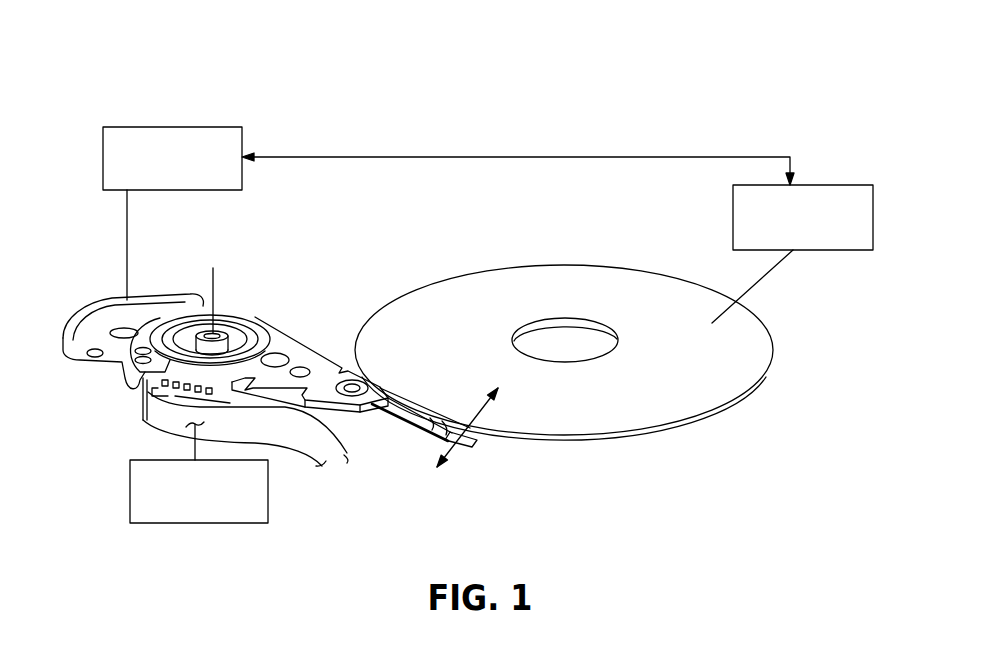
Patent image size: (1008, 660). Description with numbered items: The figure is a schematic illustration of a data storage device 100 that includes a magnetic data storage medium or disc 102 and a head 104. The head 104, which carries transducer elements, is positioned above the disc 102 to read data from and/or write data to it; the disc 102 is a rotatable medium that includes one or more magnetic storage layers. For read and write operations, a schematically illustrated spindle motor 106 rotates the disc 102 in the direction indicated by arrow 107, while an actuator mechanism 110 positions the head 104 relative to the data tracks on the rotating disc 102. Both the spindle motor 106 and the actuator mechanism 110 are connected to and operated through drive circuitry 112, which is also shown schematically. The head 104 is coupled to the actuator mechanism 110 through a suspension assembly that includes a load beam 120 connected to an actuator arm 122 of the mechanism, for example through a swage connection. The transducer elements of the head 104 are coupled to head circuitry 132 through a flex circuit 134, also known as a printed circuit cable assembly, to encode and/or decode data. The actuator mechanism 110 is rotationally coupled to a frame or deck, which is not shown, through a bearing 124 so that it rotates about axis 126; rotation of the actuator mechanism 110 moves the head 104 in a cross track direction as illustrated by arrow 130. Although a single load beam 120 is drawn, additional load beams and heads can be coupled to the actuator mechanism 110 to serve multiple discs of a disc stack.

The data storage device 100 is at (692, 122).
The disc 102 is at (657, 295).
The head 104 is at (470, 440).
The spindle motor 106 is at (842, 185).
The arrow 107 is at (442, 311).
The actuator mechanism 110 is at (231, 297).
The drive circuitry 112 is at (214, 127).
The load beam 120 is at (384, 405).
The actuator arm 122 is at (305, 333).
The bearing 124 is at (197, 309).
The axis 126 is at (209, 334).
The arrow 130 is at (468, 424).
The head circuitry 132 is at (130, 490).
The flex circuit 134 is at (253, 431).